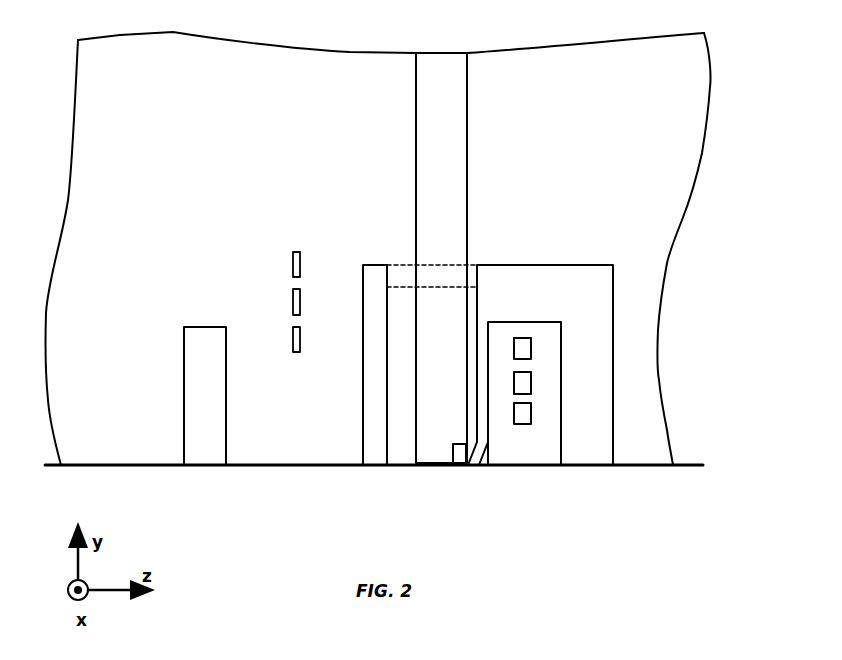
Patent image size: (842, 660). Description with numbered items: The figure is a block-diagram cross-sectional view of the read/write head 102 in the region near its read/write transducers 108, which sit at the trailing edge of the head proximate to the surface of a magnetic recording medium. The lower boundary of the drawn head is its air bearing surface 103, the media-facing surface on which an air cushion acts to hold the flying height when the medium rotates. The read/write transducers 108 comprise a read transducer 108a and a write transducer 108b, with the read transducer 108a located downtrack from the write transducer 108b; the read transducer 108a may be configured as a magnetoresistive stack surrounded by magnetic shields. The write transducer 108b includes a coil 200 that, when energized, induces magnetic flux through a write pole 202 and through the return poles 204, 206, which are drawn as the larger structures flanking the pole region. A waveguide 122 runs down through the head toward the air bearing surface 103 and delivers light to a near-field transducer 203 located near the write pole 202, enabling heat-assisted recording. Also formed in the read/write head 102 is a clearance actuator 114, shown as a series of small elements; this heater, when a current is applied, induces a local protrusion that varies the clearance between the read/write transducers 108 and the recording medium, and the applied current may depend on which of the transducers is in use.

The read/write head 102 is at (712, 82).
The air bearing surface 103 is at (665, 468).
The read/write transducers 108 is at (320, 520).
The read transducer 108a is at (187, 380).
The write transducer 108b is at (558, 216).
The clearance actuator 114 is at (291, 252).
The waveguide 122 is at (440, 60).
The coil 200 is at (530, 387).
The write pole 202 is at (484, 443).
The near-field transducer 203 is at (455, 443).
The return pole 204 is at (602, 440).
The return pole 206 is at (368, 422).